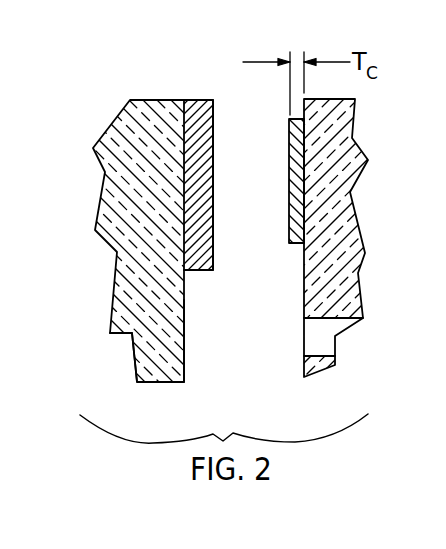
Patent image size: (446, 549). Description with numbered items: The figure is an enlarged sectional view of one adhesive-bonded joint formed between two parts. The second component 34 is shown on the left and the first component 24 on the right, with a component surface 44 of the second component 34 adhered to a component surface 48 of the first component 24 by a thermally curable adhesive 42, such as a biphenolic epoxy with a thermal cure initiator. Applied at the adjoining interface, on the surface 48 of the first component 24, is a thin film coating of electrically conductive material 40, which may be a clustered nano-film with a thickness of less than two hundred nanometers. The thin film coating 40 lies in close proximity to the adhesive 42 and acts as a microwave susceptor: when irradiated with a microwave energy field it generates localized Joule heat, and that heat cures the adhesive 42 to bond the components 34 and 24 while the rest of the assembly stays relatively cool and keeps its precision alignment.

The first component 24 is at (350, 140).
The second component 34 is at (112, 136).
The thin film coating of electrically conductive material 40 is at (289, 208).
The thermally curable adhesive 42 is at (198, 110).
The component surface 44 is at (183, 305).
The component surface 48 is at (304, 285).